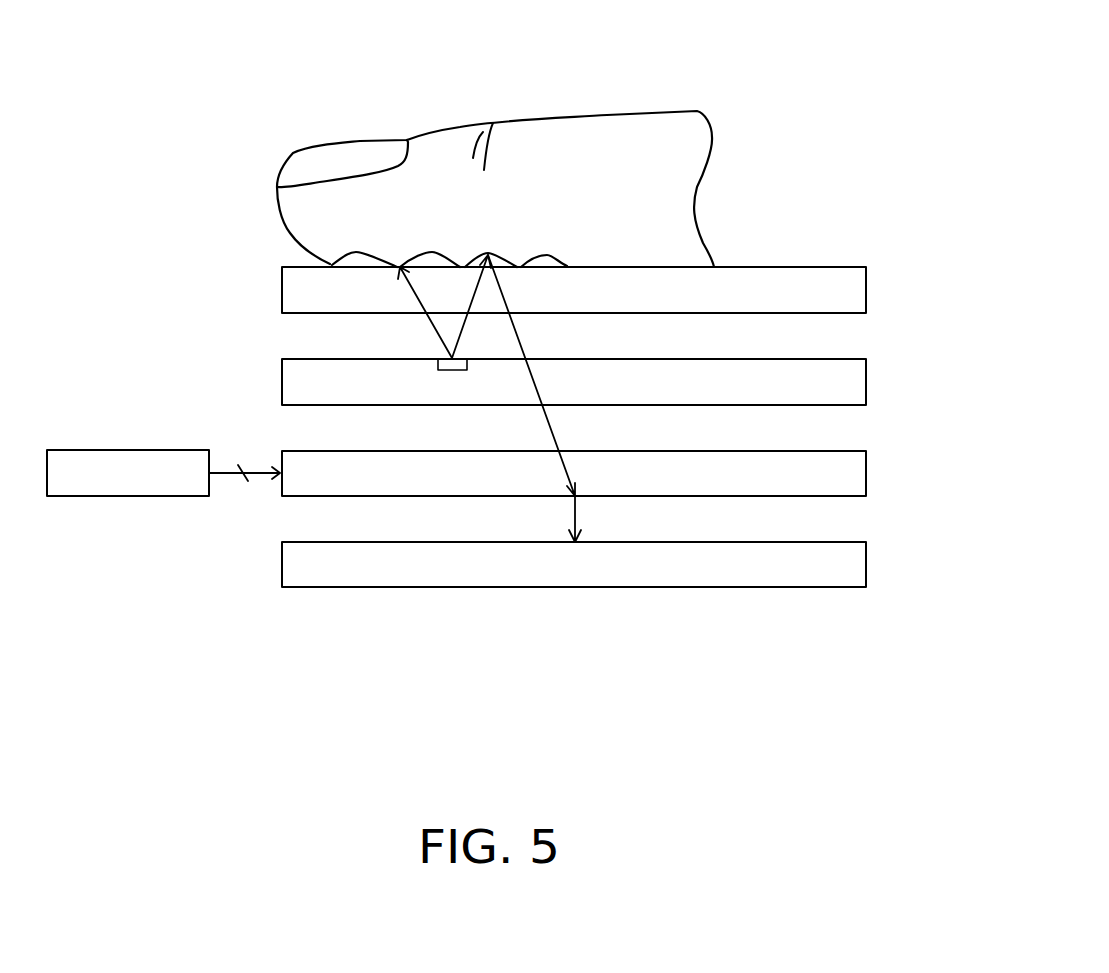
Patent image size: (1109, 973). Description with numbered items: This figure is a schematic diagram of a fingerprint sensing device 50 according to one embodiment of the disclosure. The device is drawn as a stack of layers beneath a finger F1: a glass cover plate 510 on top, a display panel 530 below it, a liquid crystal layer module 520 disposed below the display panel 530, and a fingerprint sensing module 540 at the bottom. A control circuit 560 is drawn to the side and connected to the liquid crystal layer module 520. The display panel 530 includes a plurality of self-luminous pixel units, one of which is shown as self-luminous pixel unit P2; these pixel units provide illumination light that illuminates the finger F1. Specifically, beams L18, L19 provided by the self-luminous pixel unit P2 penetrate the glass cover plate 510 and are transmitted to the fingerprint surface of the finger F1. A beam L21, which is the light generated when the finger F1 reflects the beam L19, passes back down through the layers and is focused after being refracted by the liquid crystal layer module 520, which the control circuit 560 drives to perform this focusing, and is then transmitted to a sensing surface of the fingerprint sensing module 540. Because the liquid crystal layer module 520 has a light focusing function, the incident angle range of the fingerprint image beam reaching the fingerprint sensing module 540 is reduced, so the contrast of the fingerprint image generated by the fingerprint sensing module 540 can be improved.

The finger F1 is at (670, 111).
The glass cover plate 510 is at (866, 291).
The display panel 530 is at (866, 382).
The liquid crystal layer module 520 is at (866, 474).
The fingerprint sensing module 540 is at (866, 565).
The control circuit 560 is at (140, 450).
The self-luminous pixel unit P2 is at (455, 370).
The beam L18 is at (440, 338).
The beam L19 is at (458, 352).
The beam L21 is at (578, 517).
The fingerprint sensing device 50 is at (850, 687).